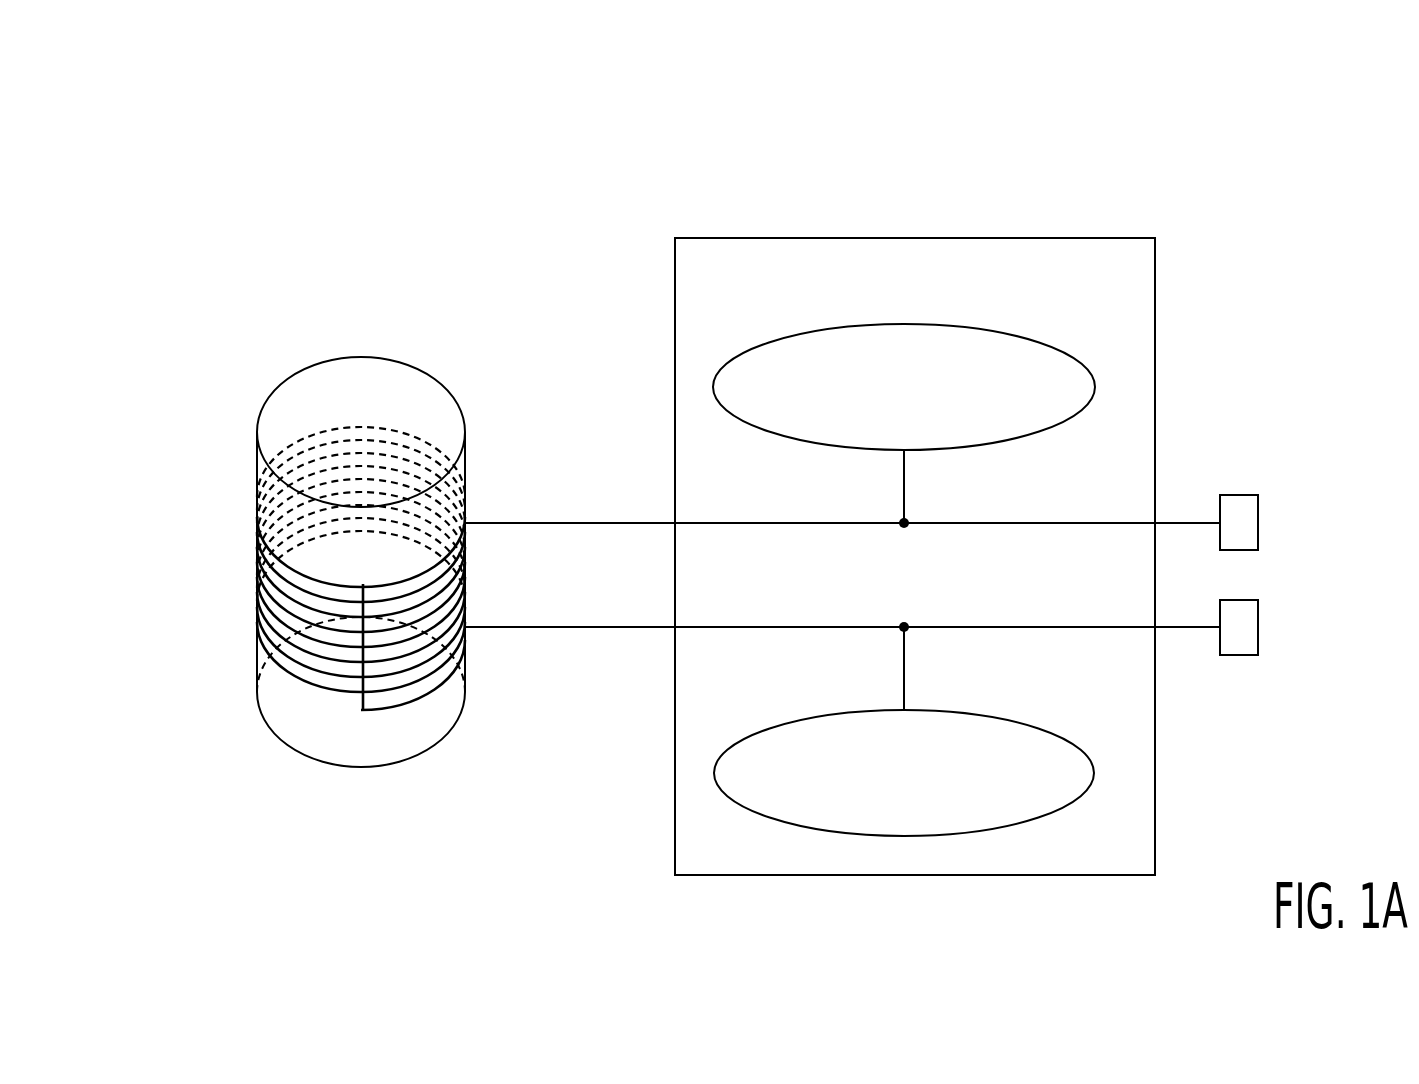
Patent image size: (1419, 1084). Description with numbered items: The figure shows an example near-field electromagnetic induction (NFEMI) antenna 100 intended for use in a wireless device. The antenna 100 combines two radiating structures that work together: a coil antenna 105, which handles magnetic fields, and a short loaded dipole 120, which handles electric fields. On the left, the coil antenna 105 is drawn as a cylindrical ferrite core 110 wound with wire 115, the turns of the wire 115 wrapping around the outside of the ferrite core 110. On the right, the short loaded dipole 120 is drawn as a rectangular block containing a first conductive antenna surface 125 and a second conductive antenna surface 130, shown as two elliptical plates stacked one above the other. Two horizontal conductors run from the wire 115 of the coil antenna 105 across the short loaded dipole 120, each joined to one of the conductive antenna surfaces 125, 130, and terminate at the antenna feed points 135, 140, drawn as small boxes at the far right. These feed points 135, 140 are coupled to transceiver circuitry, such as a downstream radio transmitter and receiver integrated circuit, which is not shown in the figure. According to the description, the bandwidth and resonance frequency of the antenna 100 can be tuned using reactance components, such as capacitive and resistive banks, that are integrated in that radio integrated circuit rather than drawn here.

The near-field electromagnetic induction (NFEMI) antenna 100 is at (250, 148).
The coil antenna 105 is at (237, 304).
The ferrite core 110 is at (287, 392).
The wire 115 is at (258, 584).
The short loaded dipole 120 is at (749, 238).
The first conductive antenna surface 125 is at (1097, 388).
The second conductive antenna surface 130 is at (1093, 765).
The feed point 135 is at (1258, 508).
The feed point 140 is at (1258, 638).